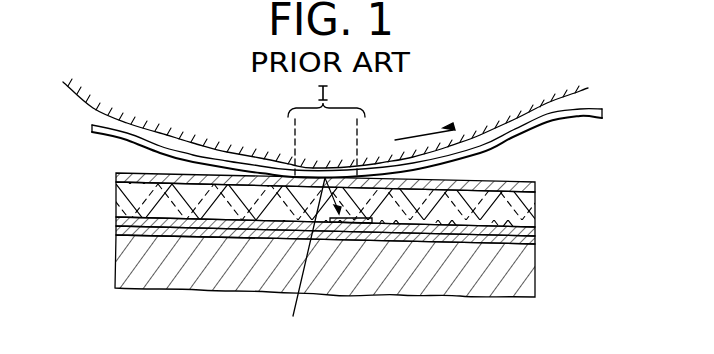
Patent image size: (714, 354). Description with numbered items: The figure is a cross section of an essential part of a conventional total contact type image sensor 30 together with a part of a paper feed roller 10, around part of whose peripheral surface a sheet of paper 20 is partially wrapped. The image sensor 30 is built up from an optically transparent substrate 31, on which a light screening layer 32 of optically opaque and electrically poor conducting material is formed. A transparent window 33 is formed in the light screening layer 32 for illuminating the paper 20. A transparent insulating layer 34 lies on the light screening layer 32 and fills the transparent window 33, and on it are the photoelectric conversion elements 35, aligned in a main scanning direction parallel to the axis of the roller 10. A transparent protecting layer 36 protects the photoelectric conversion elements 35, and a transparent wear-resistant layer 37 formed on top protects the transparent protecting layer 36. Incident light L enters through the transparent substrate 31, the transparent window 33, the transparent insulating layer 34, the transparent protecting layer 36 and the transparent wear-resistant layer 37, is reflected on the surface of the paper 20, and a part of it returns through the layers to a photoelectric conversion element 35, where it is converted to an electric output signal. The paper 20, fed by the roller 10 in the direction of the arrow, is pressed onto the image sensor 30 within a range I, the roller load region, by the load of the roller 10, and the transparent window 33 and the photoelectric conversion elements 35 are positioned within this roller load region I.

The paper feed roller 10 is at (88, 100).
The sheet of paper 20 is at (580, 118).
The total contact type image sensor 30 is at (48, 149).
The optically transparent substrate 31 is at (164, 261).
The light screening layer 32 is at (116, 232).
The transparent window 33 is at (314, 226).
The transparent insulating layer 34 is at (116, 222).
The photoelectric conversion elements 35 is at (363, 227).
The transparent protecting layer 36 is at (116, 200).
The transparent wear-resistant layer 37 is at (116, 177).
The roller load region I is at (326, 131).
The incident light L is at (301, 256).